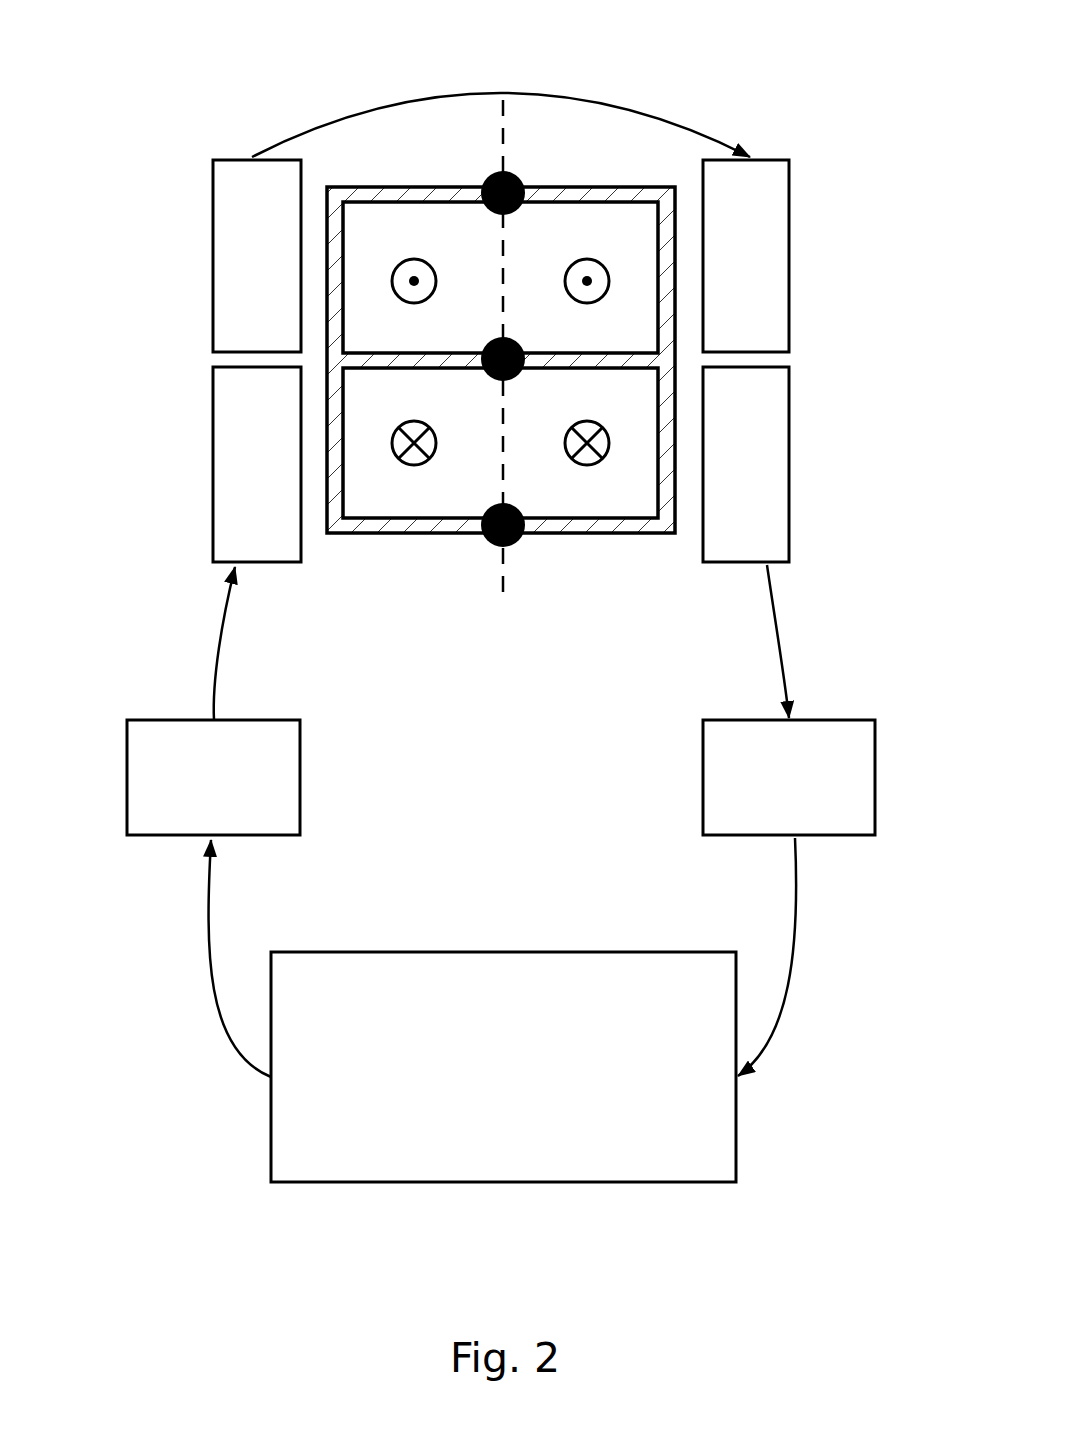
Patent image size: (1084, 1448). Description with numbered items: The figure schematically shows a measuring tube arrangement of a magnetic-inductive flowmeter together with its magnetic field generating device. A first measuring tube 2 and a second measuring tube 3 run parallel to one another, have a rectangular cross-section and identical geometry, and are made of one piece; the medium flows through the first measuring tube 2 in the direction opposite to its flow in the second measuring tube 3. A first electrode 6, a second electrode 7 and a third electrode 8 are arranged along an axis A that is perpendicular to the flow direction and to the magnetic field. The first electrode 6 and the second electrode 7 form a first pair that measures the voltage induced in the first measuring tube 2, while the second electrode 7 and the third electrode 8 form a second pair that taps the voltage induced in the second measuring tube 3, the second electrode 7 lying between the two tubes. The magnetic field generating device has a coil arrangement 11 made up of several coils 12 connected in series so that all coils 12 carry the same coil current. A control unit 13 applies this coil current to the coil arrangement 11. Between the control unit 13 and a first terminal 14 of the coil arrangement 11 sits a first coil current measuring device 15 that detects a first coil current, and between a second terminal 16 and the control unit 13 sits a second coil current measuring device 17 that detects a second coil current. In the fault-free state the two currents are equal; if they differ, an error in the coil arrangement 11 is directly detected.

The first measuring tube 2 is at (407, 192).
The second measuring tube 3 is at (400, 532).
The first electrode 6 is at (505, 173).
The second electrode 7 is at (500, 338).
The third electrode 8 is at (522, 545).
The coil arrangement 11 is at (850, 317).
The coils 12 is at (225, 270).
The control unit 13 is at (720, 1148).
The first terminal 14 is at (215, 569).
The first coil current measuring device 15 is at (143, 793).
The second terminal 16 is at (787, 569).
The second coil current measuring device 17 is at (853, 772).
The axis A is at (505, 283).